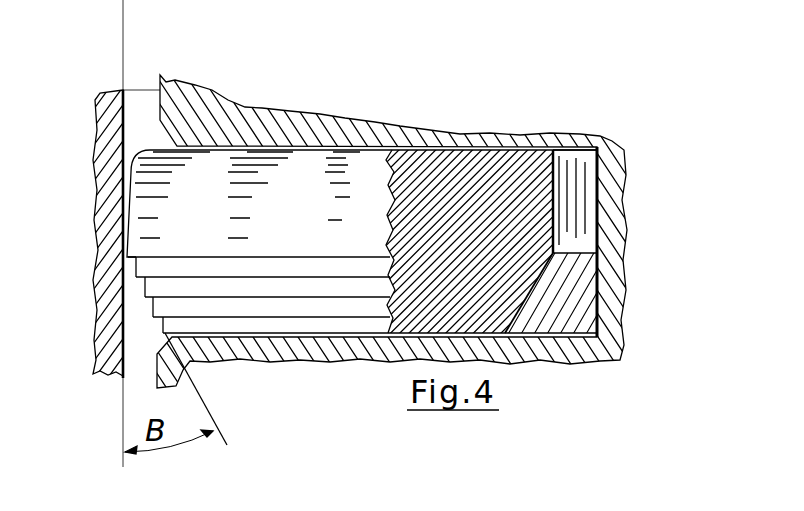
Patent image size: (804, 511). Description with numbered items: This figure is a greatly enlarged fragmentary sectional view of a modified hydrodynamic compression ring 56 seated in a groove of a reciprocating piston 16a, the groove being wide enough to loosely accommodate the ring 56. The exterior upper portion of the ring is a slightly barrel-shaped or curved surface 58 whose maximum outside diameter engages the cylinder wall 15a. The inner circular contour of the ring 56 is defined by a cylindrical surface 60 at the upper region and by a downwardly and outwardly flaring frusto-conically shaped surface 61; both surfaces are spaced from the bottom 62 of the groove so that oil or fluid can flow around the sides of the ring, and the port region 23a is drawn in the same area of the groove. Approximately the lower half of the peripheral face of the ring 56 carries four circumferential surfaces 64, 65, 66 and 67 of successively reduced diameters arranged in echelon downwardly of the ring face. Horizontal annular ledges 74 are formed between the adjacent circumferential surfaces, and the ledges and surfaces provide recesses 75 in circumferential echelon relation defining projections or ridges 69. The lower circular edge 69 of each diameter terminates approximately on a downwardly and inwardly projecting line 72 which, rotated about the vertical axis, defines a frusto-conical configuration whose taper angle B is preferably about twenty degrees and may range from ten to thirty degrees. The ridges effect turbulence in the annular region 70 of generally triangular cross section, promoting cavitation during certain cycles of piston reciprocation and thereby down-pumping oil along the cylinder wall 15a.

The cylinder wall 15a is at (126, 103).
The piston 16a is at (244, 110).
The hydrodynamic ring 56 is at (415, 185).
The barrel-shaped surface 58 is at (126, 176).
The cylindrical surface 60 is at (555, 193).
The bottom of the groove 62 is at (590, 205).
The port 23a is at (578, 233).
The frusto-conically shaped surface 61 is at (506, 327).
The circumferential surface 64 is at (300, 266).
The circumferential surface 65 is at (305, 283).
The circumferential surface 66 is at (312, 300).
The circumferential surface 67 is at (352, 320).
The lower circular edge 69 is at (134, 257).
The annular region 70 is at (153, 297).
The downwardly and inwardly projecting line 72 is at (212, 410).
The horizontal annular ledge 74 is at (220, 292).
The recess 75 is at (163, 316).